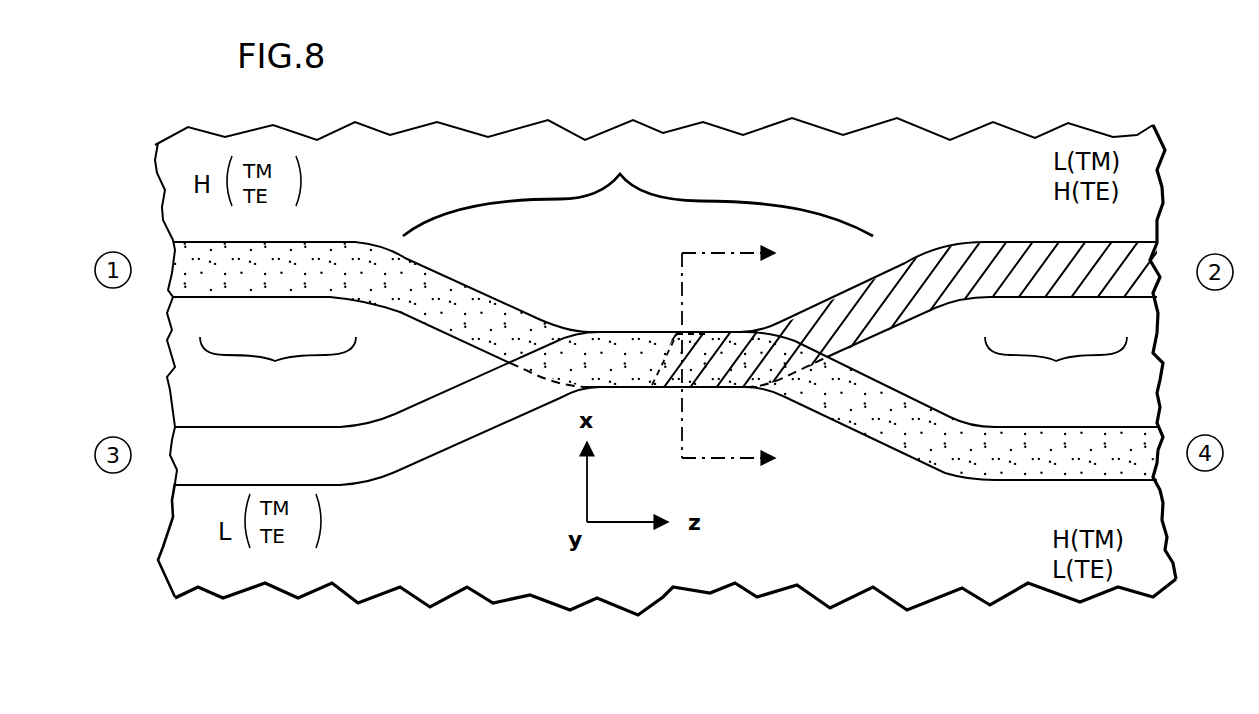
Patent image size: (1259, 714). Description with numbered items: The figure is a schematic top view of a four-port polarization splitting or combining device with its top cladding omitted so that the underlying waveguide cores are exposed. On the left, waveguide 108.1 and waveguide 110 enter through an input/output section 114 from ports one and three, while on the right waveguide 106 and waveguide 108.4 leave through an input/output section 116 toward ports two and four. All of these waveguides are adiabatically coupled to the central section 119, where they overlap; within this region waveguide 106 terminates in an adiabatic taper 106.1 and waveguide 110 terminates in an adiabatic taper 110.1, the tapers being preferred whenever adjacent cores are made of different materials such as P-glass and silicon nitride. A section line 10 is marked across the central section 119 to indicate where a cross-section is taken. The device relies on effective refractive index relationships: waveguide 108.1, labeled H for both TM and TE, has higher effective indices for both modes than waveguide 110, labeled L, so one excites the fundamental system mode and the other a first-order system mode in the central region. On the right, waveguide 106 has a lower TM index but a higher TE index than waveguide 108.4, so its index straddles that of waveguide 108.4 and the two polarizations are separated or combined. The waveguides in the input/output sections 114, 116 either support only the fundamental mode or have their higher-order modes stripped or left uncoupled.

The section line 10- 10 is at (750, 356).
The waveguide 106 is at (963, 298).
The adiabatic taper 106.1 is at (618, 360).
The waveguide 108.1 is at (293, 297).
The waveguide 108.4 is at (1073, 427).
The waveguide 110 is at (192, 427).
The adiabatic taper 110.1 is at (738, 358).
The input/output section 114 is at (278, 364).
The input/output section 116 is at (1056, 361).
The central section 119 is at (638, 190).